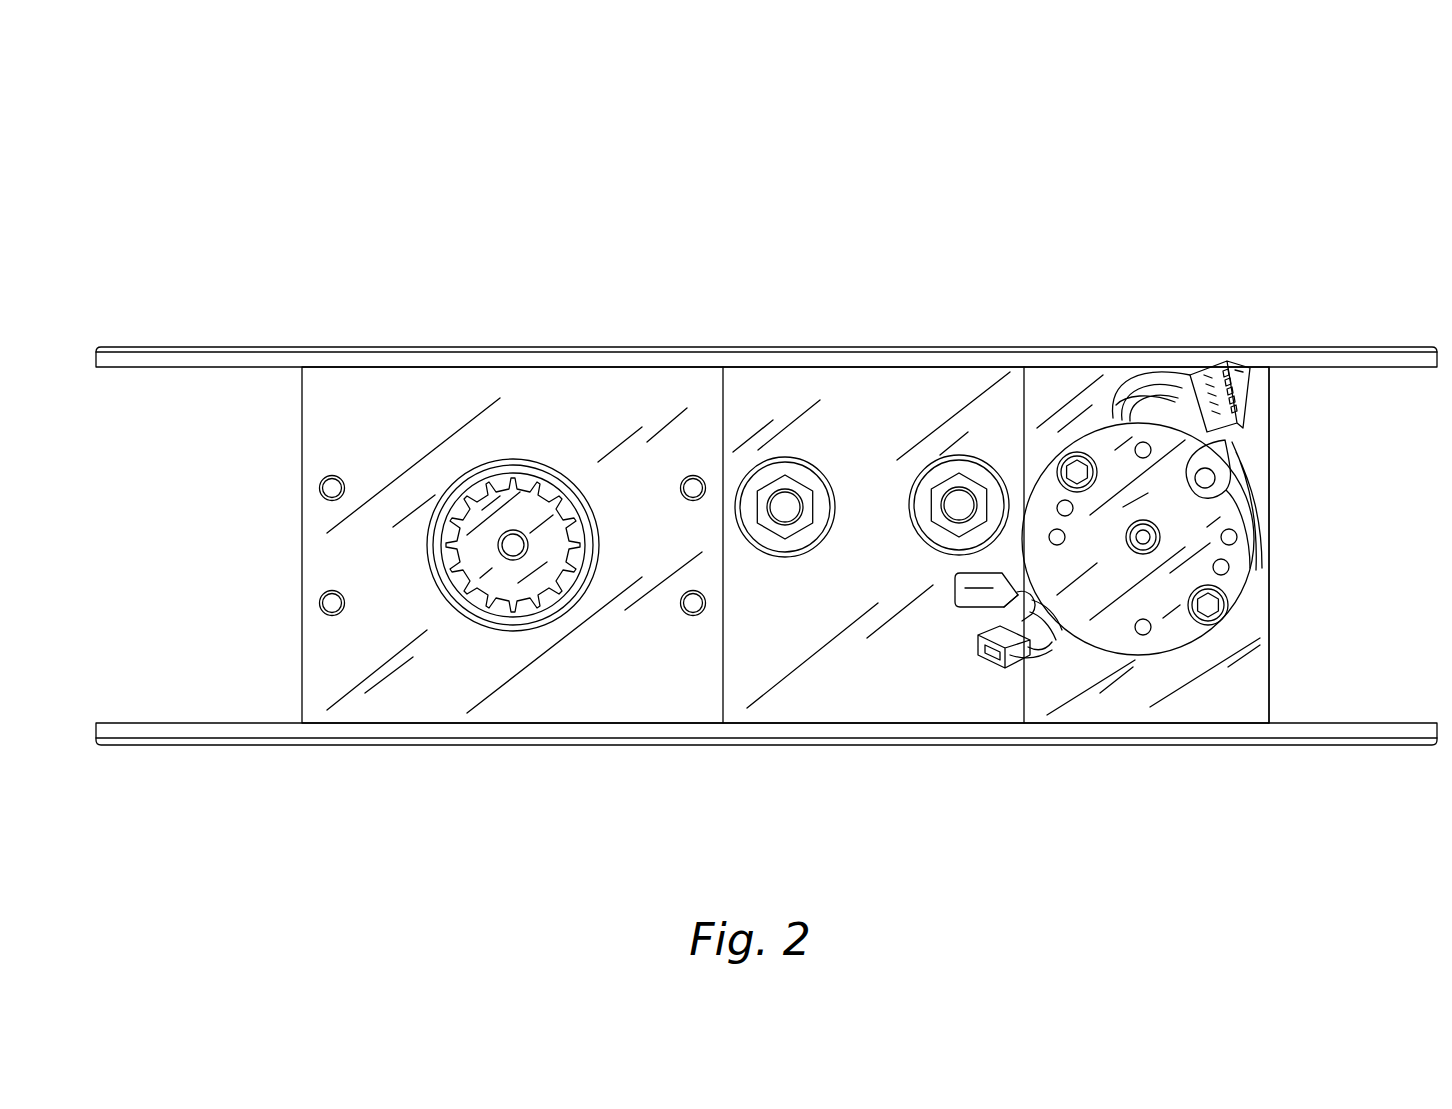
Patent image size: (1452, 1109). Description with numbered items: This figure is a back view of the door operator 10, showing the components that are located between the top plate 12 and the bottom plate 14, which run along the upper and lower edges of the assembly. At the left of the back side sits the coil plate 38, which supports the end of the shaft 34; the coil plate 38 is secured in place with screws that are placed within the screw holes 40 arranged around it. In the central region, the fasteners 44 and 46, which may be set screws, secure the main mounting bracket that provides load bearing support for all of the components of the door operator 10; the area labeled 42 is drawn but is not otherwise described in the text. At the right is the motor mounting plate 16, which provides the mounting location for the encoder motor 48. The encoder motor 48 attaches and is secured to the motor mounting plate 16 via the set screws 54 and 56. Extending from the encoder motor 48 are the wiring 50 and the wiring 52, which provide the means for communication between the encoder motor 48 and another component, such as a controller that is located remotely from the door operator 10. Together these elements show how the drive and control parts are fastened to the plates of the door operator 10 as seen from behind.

The door operator 10 is at (454, 208).
The top plate 12 is at (1383, 348).
The bottom plate 14 is at (1342, 746).
The motor mounting plate 16 is at (1270, 687).
The shaft 34 is at (527, 503).
The coil plate 38 is at (380, 427).
The screw holes 40 is at (335, 500).
The second mounting panel 42 is at (840, 418).
The fastener 44 is at (788, 537).
The fastener 46 is at (937, 527).
The encoder motor 48 is at (1072, 605).
The wiring 50 is at (1003, 670).
The wiring 52 is at (1250, 440).
The set screw 54 is at (1093, 485).
The set screw 56 is at (1229, 605).